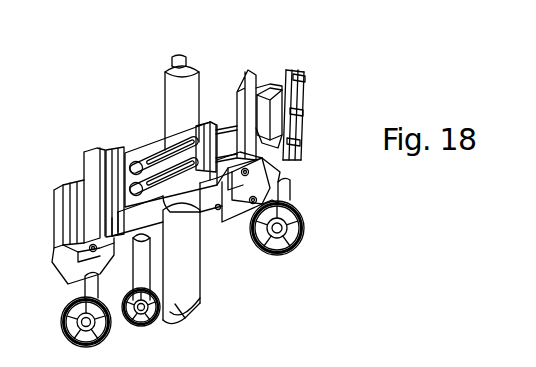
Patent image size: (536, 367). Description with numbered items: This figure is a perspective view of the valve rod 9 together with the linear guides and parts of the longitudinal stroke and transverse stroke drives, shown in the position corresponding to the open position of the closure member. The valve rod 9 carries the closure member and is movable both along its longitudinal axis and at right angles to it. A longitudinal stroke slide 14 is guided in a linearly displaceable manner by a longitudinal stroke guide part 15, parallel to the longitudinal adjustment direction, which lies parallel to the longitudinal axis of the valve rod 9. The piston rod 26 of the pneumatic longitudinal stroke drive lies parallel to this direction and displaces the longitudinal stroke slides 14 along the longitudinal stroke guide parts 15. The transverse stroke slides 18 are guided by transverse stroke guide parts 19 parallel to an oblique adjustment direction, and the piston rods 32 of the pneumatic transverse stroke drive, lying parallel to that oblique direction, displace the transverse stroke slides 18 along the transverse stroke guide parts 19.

The valve rod 9 is at (180, 92).
The longitudinal stroke slide 14 is at (223, 143).
The longitudinal stroke guide part 15 is at (110, 150).
The transverse stroke slide 18 is at (265, 112).
The transverse stroke guide part 19 is at (296, 77).
The piston rod 26 is at (143, 265).
The piston rods 32 is at (88, 285).